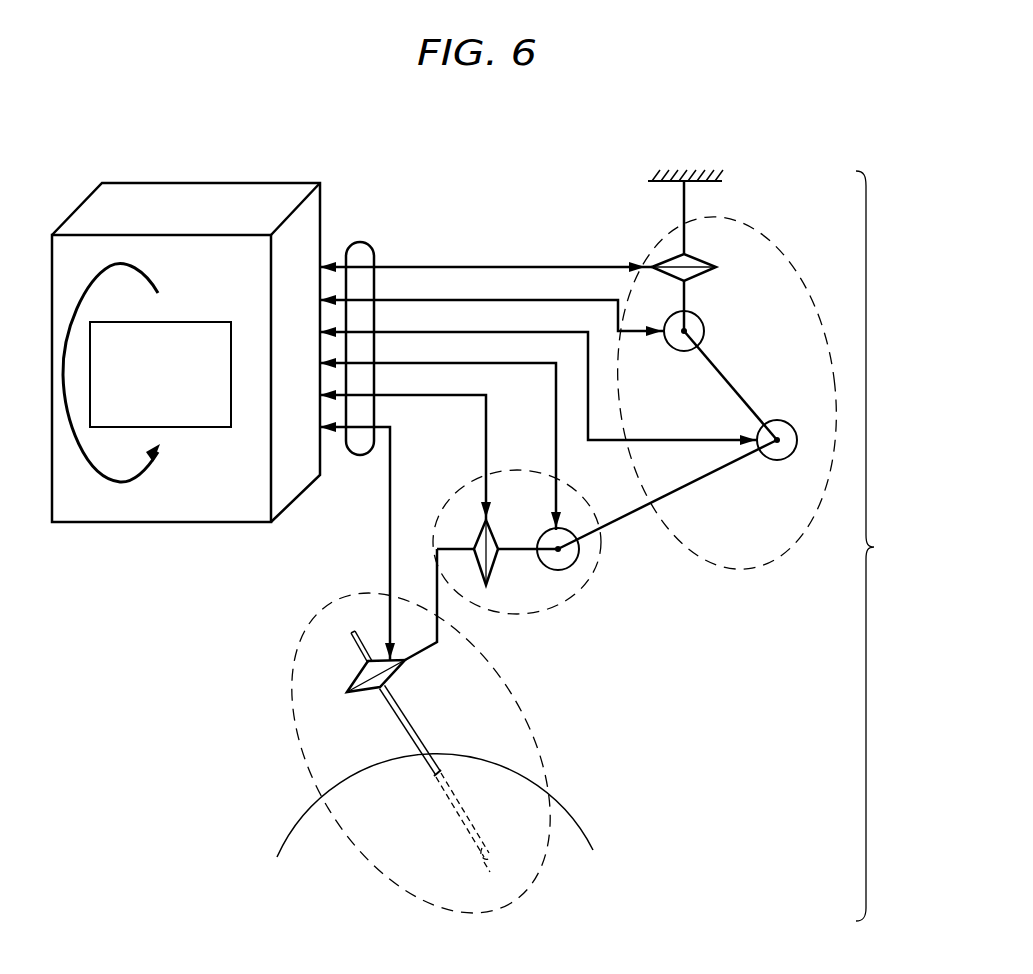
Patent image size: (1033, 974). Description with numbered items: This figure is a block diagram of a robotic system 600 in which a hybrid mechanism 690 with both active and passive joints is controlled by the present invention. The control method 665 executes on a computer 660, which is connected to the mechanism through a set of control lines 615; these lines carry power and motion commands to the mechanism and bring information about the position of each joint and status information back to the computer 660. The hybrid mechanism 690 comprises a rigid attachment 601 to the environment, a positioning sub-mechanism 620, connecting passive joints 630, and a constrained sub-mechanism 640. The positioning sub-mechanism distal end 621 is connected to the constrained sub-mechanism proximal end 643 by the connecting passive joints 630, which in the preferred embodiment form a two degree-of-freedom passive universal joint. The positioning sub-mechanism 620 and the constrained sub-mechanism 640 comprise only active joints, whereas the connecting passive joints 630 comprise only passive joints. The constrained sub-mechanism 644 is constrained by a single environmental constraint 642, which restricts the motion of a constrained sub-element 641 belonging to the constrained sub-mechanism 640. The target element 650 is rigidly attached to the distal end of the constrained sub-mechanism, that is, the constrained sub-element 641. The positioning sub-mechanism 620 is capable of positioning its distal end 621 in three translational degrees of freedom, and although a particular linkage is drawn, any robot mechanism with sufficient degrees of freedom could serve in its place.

The control system 600 is at (731, 121).
The rigid attachment 601 is at (690, 183).
The control lines 615 is at (360, 243).
The positioning sub-mechanism 620 is at (745, 575).
The positioning sub-mechanism distal end 621 is at (667, 503).
The connecting passive joints 630 is at (572, 597).
The constrained sub-mechanism 640 is at (291, 668).
The constrained sub-element 641 is at (406, 737).
The environmental constraint 642 is at (432, 776).
The constrained sub-mechanism proximal end 643 is at (447, 645).
The constrained sub-mechanism 644 is at (492, 890).
The target element 650 is at (530, 887).
The computer 660 is at (186, 330).
The control method 665 is at (170, 323).
The hybrid mechanism 690 is at (889, 546).